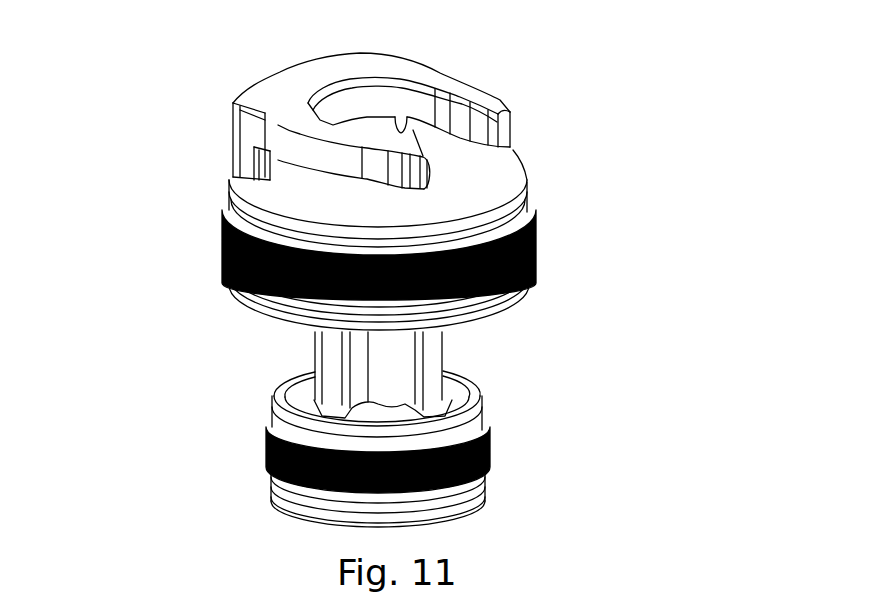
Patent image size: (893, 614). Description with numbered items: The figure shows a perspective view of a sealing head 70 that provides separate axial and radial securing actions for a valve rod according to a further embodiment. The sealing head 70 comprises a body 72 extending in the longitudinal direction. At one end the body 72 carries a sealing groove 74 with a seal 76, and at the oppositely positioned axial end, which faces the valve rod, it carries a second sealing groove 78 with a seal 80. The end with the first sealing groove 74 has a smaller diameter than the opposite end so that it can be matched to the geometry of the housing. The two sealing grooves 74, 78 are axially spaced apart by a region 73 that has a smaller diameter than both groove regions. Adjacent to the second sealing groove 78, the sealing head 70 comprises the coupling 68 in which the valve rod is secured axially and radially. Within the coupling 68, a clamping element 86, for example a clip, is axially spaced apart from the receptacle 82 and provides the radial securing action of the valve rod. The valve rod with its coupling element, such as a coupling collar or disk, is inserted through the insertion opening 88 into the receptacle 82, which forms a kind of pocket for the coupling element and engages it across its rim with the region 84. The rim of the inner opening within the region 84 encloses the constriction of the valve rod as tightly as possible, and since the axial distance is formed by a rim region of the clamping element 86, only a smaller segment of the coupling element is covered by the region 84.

The coupling 68 is at (382, 155).
The sealing head 70 is at (186, 141).
The body 72 is at (414, 386).
The region 73 is at (327, 360).
The sealing groove 74 is at (470, 480).
The seal 76 is at (270, 456).
The sealing groove 78 is at (505, 275).
The seal 80 is at (250, 273).
The receptacle 82 is at (282, 165).
The region 84 is at (401, 131).
The clamping element 86 is at (504, 110).
The insertion opening 88 is at (462, 169).